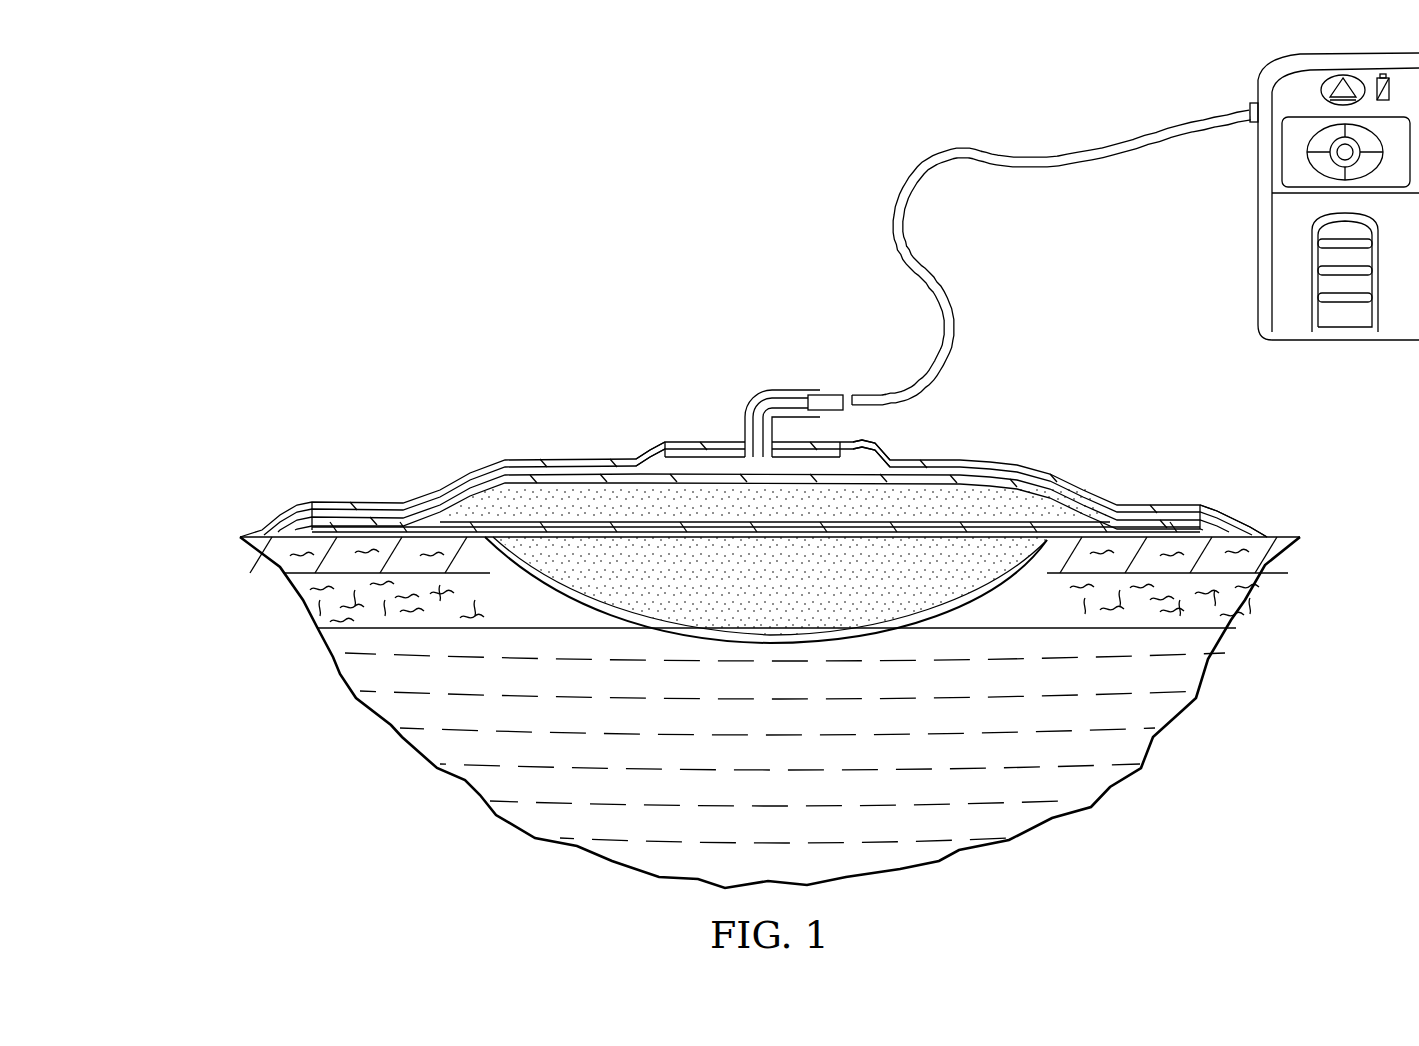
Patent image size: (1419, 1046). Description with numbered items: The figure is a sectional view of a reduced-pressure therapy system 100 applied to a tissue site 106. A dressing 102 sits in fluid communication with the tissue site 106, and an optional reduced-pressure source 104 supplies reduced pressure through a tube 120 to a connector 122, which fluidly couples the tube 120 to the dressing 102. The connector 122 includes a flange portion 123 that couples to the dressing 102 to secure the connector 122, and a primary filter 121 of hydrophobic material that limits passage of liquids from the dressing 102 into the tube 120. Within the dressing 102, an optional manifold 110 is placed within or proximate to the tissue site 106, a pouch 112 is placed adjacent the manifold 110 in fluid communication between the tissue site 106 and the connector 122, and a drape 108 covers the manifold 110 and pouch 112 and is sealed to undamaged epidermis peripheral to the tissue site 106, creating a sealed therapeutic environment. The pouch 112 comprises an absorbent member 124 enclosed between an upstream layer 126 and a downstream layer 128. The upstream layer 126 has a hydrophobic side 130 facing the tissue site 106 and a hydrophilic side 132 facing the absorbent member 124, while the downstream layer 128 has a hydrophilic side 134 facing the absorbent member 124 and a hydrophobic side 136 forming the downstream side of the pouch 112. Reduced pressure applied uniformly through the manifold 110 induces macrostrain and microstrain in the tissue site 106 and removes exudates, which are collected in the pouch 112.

The therapy system 100 is at (743, 344).
The dressing 102 is at (692, 492).
The reduced-pressure source 104 is at (1256, 268).
The tissue site 106 is at (705, 648).
The drape 108 is at (527, 458).
The manifold 110 is at (795, 597).
The pouch 112 is at (1210, 528).
The tube 120 is at (897, 210).
The primary filter 121 is at (853, 452).
The connector 122 is at (752, 395).
The flange portion 123 is at (705, 452).
The absorbent member 124 is at (1065, 518).
The upstream layer 126 is at (230, 537).
The downstream layer 128 is at (203, 525).
The hydrophobic side 130 is at (1160, 530).
The hydrophilic side 132 is at (370, 520).
The hydrophilic side 134 is at (973, 480).
The hydrophobic side 136 is at (643, 458).